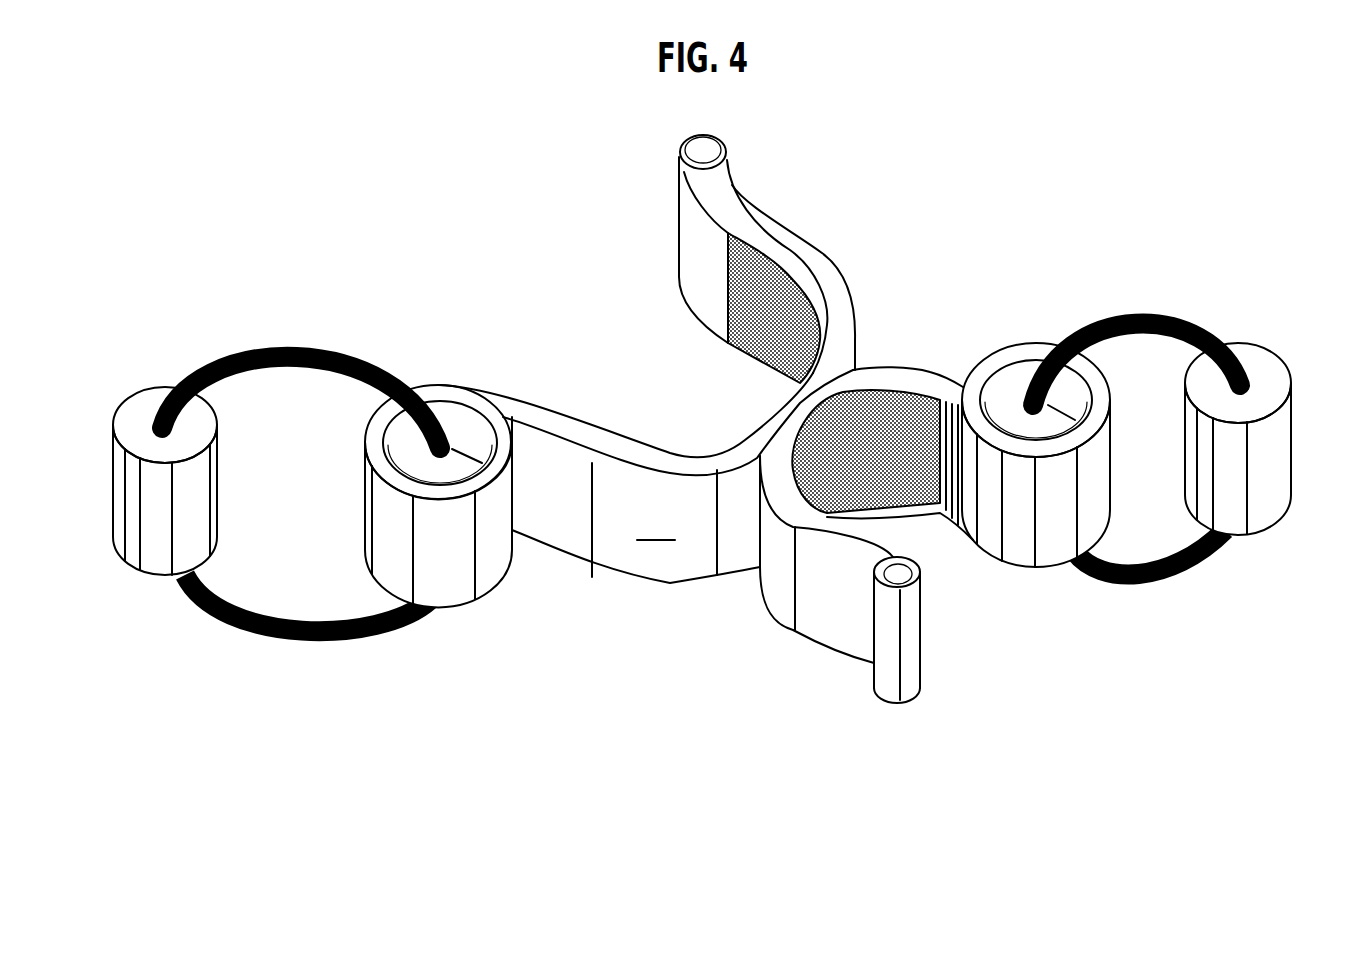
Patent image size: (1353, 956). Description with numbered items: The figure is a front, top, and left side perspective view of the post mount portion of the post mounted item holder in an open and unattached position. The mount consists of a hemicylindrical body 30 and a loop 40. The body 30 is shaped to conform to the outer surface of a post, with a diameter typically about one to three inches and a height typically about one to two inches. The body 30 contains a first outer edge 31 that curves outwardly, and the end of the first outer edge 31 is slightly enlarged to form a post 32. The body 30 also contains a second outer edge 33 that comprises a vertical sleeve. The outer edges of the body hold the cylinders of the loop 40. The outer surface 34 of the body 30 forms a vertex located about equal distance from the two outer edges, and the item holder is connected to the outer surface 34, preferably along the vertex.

The hemicylindrical body 30 is at (740, 437).
The first outer edge 31 is at (753, 212).
The post 32 is at (727, 147).
The second outer edge 33 is at (457, 608).
The outer surface 34 is at (656, 519).
The loop 40 is at (280, 290).